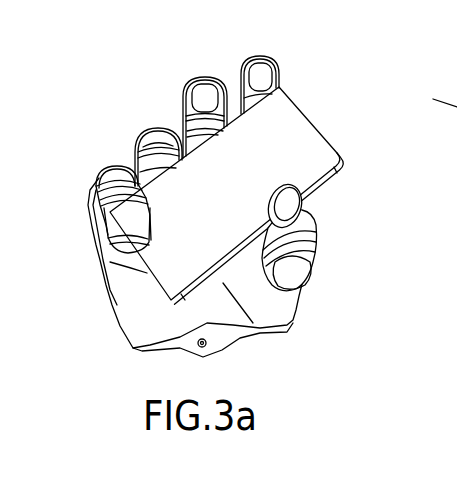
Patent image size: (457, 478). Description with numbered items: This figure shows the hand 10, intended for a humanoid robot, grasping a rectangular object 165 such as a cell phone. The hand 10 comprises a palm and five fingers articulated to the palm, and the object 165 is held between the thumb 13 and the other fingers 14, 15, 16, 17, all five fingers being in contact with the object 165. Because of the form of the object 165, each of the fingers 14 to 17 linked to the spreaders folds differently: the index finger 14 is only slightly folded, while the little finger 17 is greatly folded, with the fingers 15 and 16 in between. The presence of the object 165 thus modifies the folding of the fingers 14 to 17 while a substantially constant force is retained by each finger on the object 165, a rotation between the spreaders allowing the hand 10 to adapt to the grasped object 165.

The hand 10 is at (100, 306).
The thumb 13 is at (316, 212).
The index finger 14 is at (263, 57).
The finger 15 is at (197, 80).
The finger 16 is at (156, 128).
The little finger 17 is at (103, 170).
The rectangular object 165 is at (313, 124).